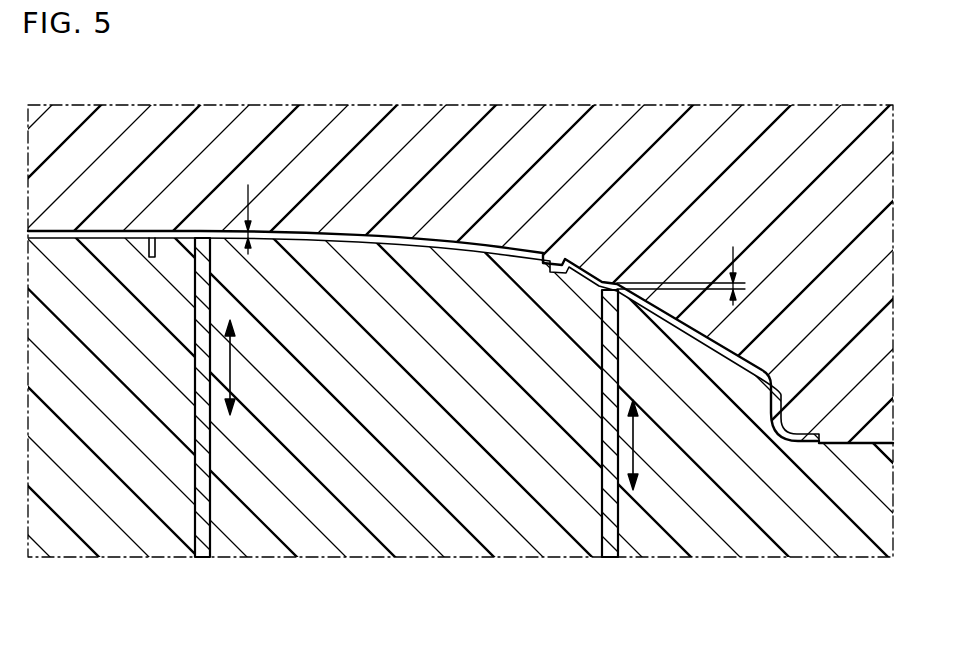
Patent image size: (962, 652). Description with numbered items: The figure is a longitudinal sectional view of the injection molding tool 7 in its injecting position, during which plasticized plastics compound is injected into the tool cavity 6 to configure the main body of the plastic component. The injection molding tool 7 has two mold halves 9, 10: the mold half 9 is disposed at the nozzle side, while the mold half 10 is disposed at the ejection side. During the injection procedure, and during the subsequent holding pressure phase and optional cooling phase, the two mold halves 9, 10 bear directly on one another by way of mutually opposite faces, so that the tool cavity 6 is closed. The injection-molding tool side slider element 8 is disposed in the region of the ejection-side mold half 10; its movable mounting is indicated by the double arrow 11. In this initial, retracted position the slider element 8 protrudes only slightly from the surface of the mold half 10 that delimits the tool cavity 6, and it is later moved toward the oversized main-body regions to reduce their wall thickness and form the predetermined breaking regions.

The tool cavity 6 is at (424, 224).
The injection molding tool 7 is at (686, 79).
The slider element 8 is at (202, 500).
The mold half 9 is at (116, 184).
The mold half 10 is at (121, 456).
The double arrow 11 is at (233, 376).